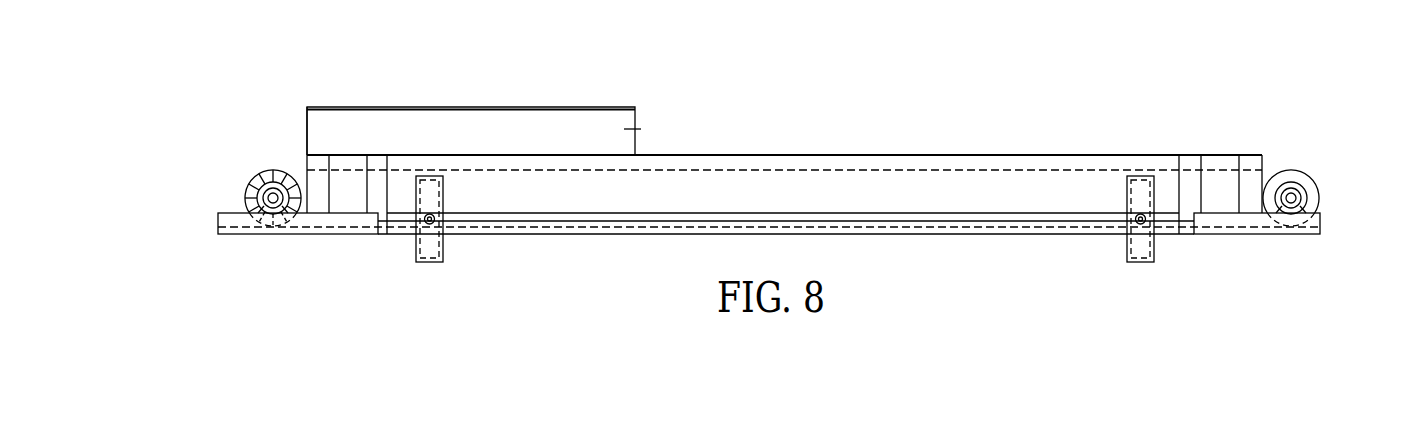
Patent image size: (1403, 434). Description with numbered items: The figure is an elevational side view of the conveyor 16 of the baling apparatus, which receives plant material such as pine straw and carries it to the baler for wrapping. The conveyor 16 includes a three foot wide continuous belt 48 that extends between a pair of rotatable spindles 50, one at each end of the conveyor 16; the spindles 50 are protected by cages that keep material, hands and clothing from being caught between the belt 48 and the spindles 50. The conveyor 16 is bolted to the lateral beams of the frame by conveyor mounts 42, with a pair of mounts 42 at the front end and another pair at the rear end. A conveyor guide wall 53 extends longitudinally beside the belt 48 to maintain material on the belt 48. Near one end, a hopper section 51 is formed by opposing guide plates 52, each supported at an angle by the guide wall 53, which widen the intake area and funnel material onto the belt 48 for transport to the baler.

The conveyor 16 is at (958, 124).
The conveyor mount 42 is at (428, 247).
The continuous belt 48 is at (847, 170).
The rotatable spindle 50 is at (262, 172).
The hopper section 51 is at (368, 100).
The guide plate 52 is at (635, 129).
The conveyor guide wall 53 is at (1065, 155).